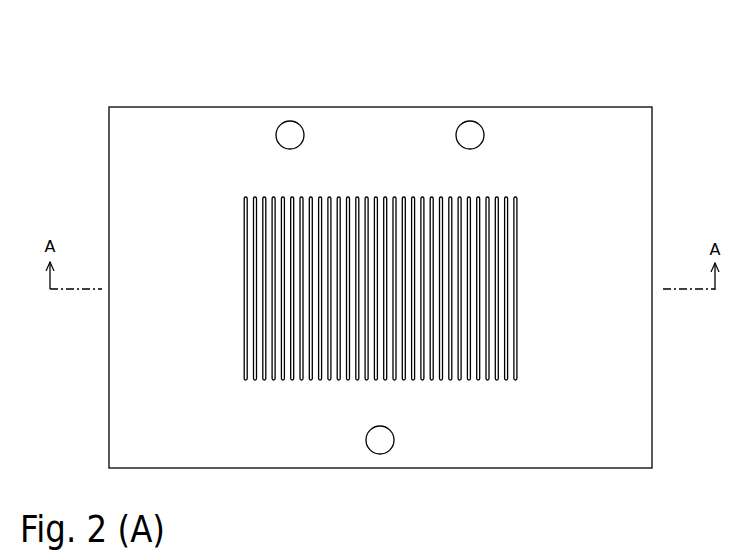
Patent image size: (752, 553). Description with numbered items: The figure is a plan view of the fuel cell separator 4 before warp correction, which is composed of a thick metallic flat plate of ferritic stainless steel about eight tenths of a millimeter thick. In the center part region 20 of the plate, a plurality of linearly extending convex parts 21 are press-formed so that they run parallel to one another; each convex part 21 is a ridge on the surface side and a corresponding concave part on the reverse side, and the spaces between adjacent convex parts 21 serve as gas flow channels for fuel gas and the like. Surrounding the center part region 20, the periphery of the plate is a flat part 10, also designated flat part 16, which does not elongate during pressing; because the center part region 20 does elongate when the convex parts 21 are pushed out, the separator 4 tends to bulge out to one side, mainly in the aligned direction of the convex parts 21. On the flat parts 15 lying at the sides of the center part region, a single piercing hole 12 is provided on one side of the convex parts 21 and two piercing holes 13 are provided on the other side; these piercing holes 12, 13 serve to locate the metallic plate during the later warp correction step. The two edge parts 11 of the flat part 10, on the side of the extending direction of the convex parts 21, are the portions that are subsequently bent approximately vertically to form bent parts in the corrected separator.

The fuel cell separator 4 is at (597, 98).
The flat part 10 is at (200, 181).
The edge part 11 is at (135, 329).
The piercing hole 12 is at (380, 448).
The piercing hole 13 is at (290, 130).
The flat part 15 is at (368, 150).
The flat part 16 is at (165, 290).
The center part region 20 is at (327, 357).
The convex part 21 is at (507, 381).